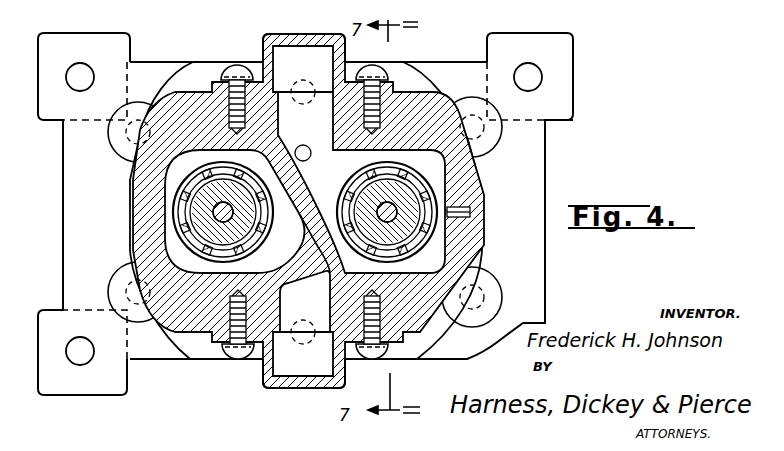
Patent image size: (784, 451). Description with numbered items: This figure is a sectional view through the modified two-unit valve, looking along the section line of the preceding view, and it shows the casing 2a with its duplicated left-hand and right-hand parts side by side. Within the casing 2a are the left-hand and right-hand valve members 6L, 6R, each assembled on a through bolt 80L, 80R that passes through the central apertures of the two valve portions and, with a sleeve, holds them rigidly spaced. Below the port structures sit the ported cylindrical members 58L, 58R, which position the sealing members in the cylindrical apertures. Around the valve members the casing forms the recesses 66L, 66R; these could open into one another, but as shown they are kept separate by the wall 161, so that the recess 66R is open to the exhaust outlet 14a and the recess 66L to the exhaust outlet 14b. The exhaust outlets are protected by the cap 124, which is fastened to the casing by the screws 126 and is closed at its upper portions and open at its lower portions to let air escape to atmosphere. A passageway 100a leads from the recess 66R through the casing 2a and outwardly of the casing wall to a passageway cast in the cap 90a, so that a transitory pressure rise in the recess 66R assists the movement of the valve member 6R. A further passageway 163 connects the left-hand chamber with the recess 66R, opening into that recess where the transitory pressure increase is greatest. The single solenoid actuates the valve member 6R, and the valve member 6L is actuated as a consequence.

The casing 2a is at (487, 188).
The valve member 6L is at (214, 190).
The valve member 6R is at (387, 190).
The outlet 14a is at (290, 95).
The outlet 14b is at (318, 314).
The cylindrical member 58L is at (180, 221).
The cylindrical member 58R is at (430, 220).
The recess 66L is at (217, 278).
The recess 66R is at (388, 272).
The through bolt 80L is at (250, 254).
The through bolt 80R is at (383, 200).
The cap 90a is at (547, 150).
The passageway 100a is at (301, 162).
The cap 124 is at (263, 40).
The screws 126 is at (377, 66).
The wall 161 is at (317, 247).
The passageway 163 is at (458, 212).